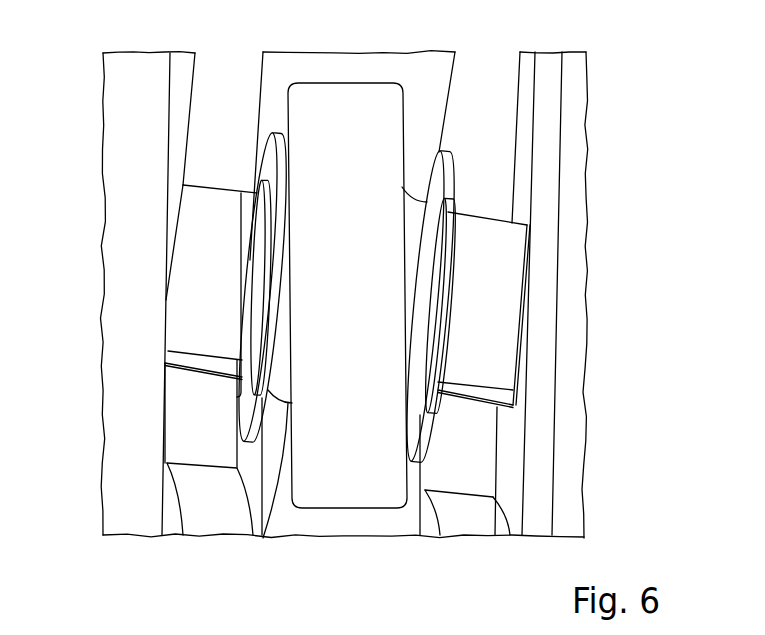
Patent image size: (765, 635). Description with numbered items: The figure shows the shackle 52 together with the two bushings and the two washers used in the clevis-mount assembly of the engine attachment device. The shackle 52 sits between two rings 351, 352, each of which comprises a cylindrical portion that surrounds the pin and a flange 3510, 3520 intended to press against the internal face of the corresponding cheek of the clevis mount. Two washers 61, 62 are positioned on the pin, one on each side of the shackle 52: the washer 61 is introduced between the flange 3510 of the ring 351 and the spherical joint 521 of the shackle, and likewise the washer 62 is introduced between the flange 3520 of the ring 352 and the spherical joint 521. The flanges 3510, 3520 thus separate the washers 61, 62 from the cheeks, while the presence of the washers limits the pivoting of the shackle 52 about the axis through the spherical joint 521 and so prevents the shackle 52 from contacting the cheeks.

The shackle 52 is at (367, 472).
The spherical joint 521 is at (261, 398).
The ring 351 is at (196, 294).
The ring 352 is at (498, 250).
The flange 3510 is at (251, 250).
The flange 3520 is at (453, 196).
The washer 61 is at (262, 402).
The washer 62 is at (415, 443).